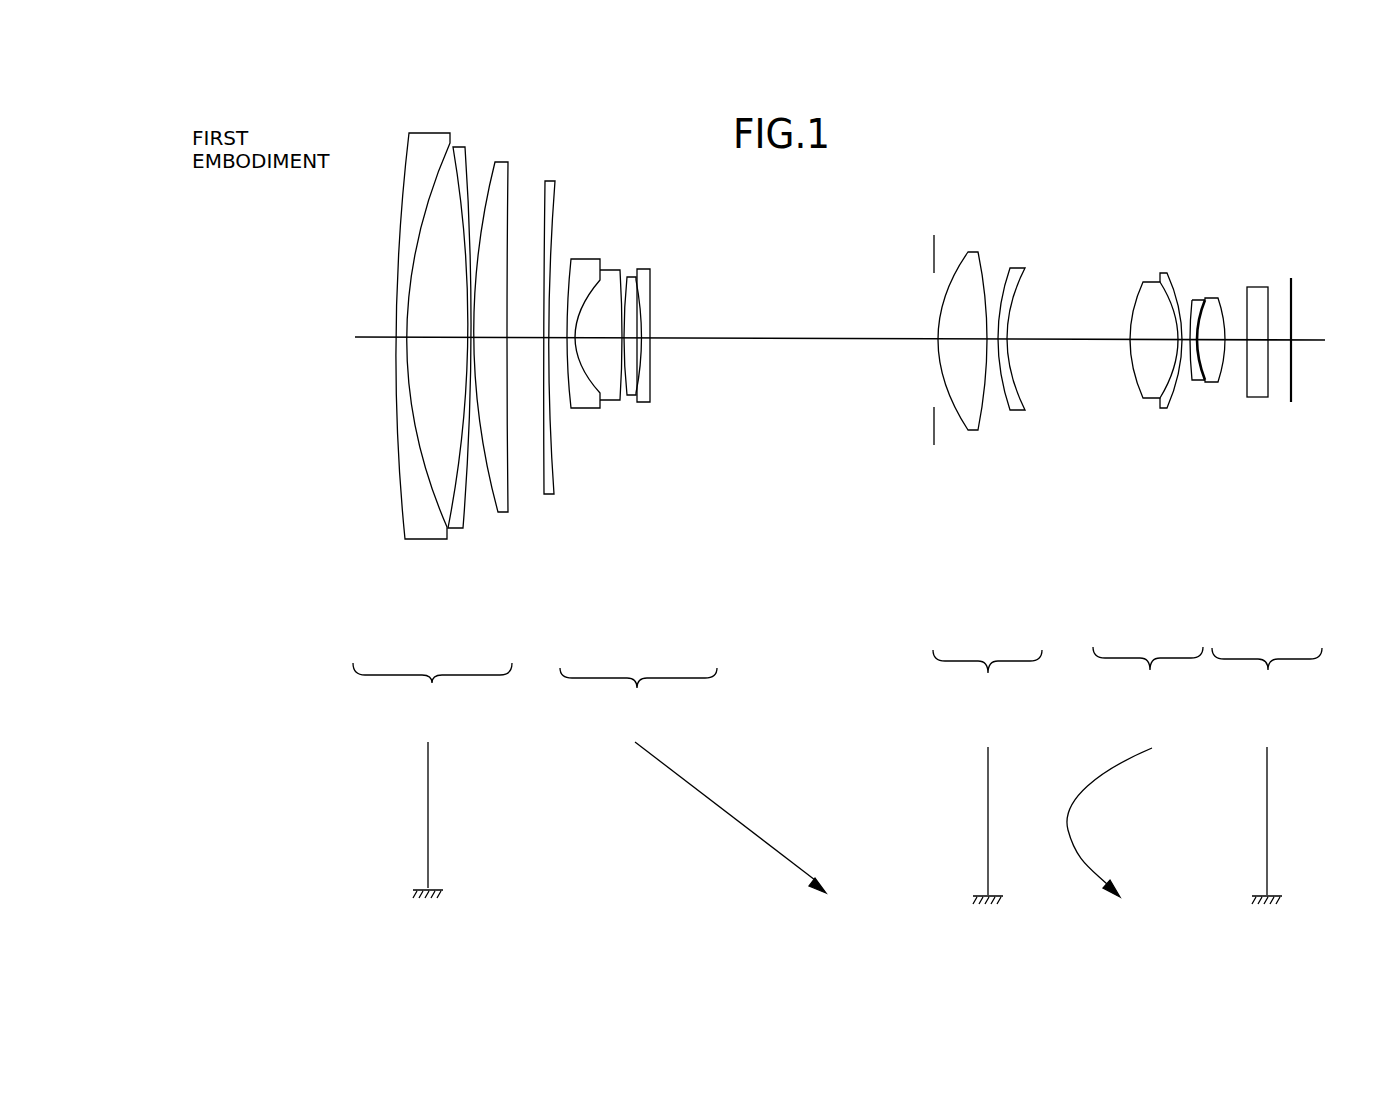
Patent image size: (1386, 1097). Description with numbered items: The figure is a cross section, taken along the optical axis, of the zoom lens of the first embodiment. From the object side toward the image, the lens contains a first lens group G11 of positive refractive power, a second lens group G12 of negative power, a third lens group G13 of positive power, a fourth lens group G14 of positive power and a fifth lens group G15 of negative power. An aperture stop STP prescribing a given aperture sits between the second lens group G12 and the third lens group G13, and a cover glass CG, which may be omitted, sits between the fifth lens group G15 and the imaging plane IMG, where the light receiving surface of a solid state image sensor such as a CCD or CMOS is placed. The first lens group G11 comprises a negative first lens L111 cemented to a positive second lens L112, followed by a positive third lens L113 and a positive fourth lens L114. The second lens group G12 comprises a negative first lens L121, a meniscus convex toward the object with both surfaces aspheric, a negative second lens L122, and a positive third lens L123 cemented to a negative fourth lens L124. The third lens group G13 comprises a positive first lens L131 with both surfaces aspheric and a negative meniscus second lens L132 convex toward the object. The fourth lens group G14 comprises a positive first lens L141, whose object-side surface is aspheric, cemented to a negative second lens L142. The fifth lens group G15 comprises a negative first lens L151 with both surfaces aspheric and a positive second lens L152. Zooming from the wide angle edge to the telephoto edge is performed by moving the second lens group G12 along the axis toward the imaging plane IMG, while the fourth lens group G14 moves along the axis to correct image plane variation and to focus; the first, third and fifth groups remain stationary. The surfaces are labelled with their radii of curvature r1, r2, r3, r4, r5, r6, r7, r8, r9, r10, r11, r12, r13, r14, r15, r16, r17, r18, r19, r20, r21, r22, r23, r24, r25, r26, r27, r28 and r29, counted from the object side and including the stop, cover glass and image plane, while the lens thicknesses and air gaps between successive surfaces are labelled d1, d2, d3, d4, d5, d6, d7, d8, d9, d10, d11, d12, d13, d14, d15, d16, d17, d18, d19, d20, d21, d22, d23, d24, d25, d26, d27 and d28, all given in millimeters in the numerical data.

The negative first lens L111 is at (422, 545).
The positive second lens L112 is at (452, 538).
The positive third lens L113 is at (500, 518).
The positive fourth lens L114 is at (545, 500).
The negative first lens L121 is at (585, 412).
The negative second lens L122 is at (611, 403).
The positive third lens L123 is at (633, 397).
The negative fourth lens L124 is at (647, 404).
The positive first lens L131 is at (968, 434).
The negative second lens L132 is at (1017, 412).
The positive first lens L141 is at (1150, 400).
The negative second lens L142 is at (1163, 410).
The negative first lens L151 is at (1200, 382).
The positive second lens L152 is at (1213, 384).
The first lens group G11 is at (432, 780).
The second lens group G12 is at (693, 780).
The third lens group G13 is at (987, 777).
The fourth lens group G14 is at (1135, 772).
The fifth lens group G15 is at (1267, 776).
The aperture stop STP is at (934, 238).
The cover glass CG is at (1258, 293).
The imaging plane IMG is at (1292, 278).
The radius of curvature r1 is at (397, 216).
The radius of curvature r2 is at (446, 150).
The radius of curvature r3 is at (456, 146).
The radius of curvature r4 is at (468, 170).
The radius of curvature r5 is at (494, 194).
The radius of curvature r6 is at (541, 183).
The radius of curvature r7 is at (557, 192).
The radius of curvature r8 is at (566, 272).
The radius of curvature r9 is at (592, 282).
The radius of curvature r10 is at (622, 282).
The radius of curvature r11 is at (628, 282).
The radius of curvature r12 is at (634, 273).
The radius of curvature r13 is at (648, 291).
The radius of curvature r14 is at (651, 323).
The radius of curvature r15 is at (932, 263).
The radius of curvature r16 is at (947, 297).
The radius of curvature r17 is at (983, 272).
The radius of curvature r18 is at (1005, 272).
The radius of curvature r19 is at (1013, 305).
The radius of curvature r20 is at (1135, 303).
The radius of curvature r21 is at (1148, 292).
The radius of curvature r22 is at (1173, 297).
The radius of curvature r23 is at (1190, 320).
The radius of curvature r24 is at (1197, 330).
The radius of curvature r25 is at (1214, 298).
The radius of curvature r26 is at (1225, 310).
The radius of curvature r27 is at (1268, 325).
The radius of curvature r28 is at (1272, 322).
The radius of curvature r29 is at (1292, 322).
The surface distance d1 is at (397, 343).
The surface distance d2 is at (437, 341).
The surface distance d3 is at (468, 350).
The surface distance d4 is at (480, 343).
The surface distance d5 is at (509, 360).
The surface distance d6 is at (527, 343).
The surface distance d7 is at (557, 343).
The surface distance d8 is at (568, 345).
The surface distance d9 is at (600, 342).
The surface distance d10 is at (621, 341).
The surface distance d11 is at (624, 341).
The surface distance d12 is at (638, 341).
The surface distance d13 is at (650, 341).
The surface distance d14 is at (806, 343).
The surface distance d15 is at (938, 343).
The surface distance d16 is at (967, 343).
The surface distance d17 is at (996, 345).
The surface distance d18 is at (1003, 343).
The surface distance d19 is at (1080, 343).
The surface distance d20 is at (1133, 343).
The surface distance d21 is at (1160, 347).
The surface distance d22 is at (1186, 350).
The surface distance d23 is at (1200, 352).
The surface distance d24 is at (1222, 352).
The surface distance d25 is at (1217, 352).
The surface distance d26 is at (1237, 347).
The surface distance d27 is at (1265, 347).
The surface distance d28 is at (1292, 347).